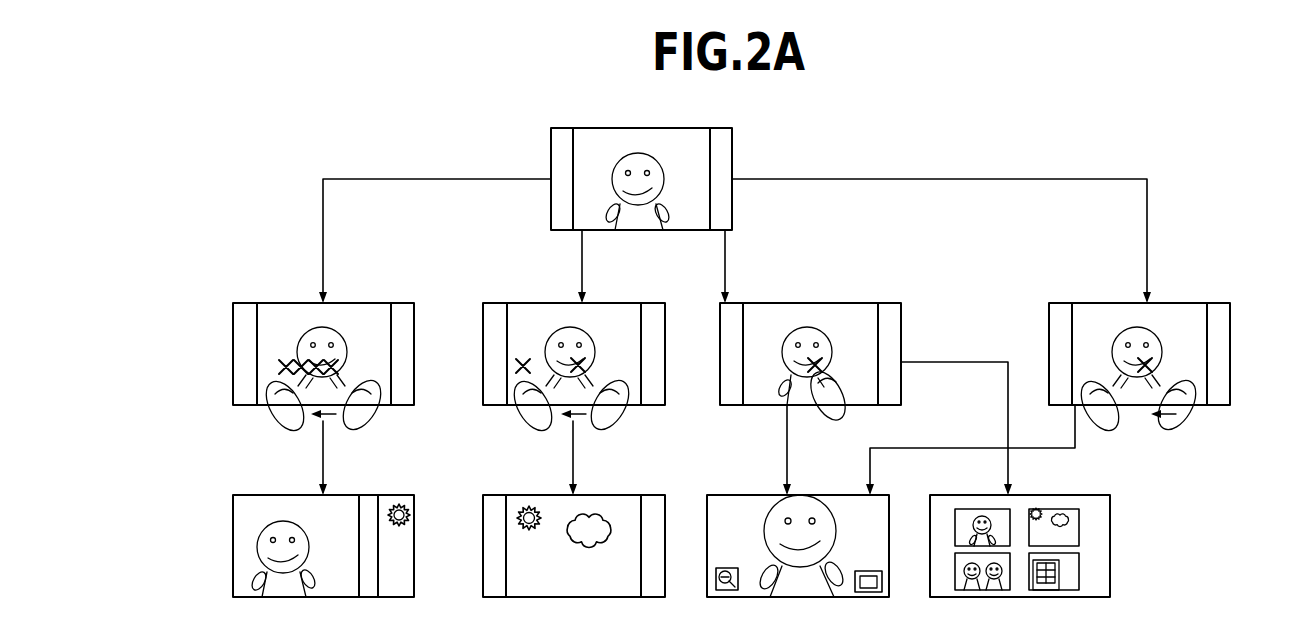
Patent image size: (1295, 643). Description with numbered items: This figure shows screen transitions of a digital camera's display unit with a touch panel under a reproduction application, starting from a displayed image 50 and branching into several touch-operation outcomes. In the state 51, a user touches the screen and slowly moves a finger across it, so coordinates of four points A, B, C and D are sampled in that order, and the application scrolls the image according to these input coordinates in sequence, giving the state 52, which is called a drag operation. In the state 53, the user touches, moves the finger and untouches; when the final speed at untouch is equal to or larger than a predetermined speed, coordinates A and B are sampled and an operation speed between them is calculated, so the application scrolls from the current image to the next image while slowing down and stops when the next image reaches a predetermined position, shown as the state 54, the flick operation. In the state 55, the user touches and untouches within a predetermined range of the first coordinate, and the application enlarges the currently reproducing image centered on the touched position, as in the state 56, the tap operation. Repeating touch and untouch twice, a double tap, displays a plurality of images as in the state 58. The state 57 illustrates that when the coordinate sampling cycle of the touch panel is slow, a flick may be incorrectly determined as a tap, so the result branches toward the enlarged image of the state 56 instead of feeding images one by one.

The original captured image 50 is at (657, 127).
The state 51 is at (345, 302).
The state 52 is at (345, 494).
The state 53 is at (620, 302).
The state 54 is at (600, 494).
The state 55 is at (840, 302).
The state 56 is at (797, 494).
The state 57 is at (1167, 302).
The state 58 is at (1050, 494).